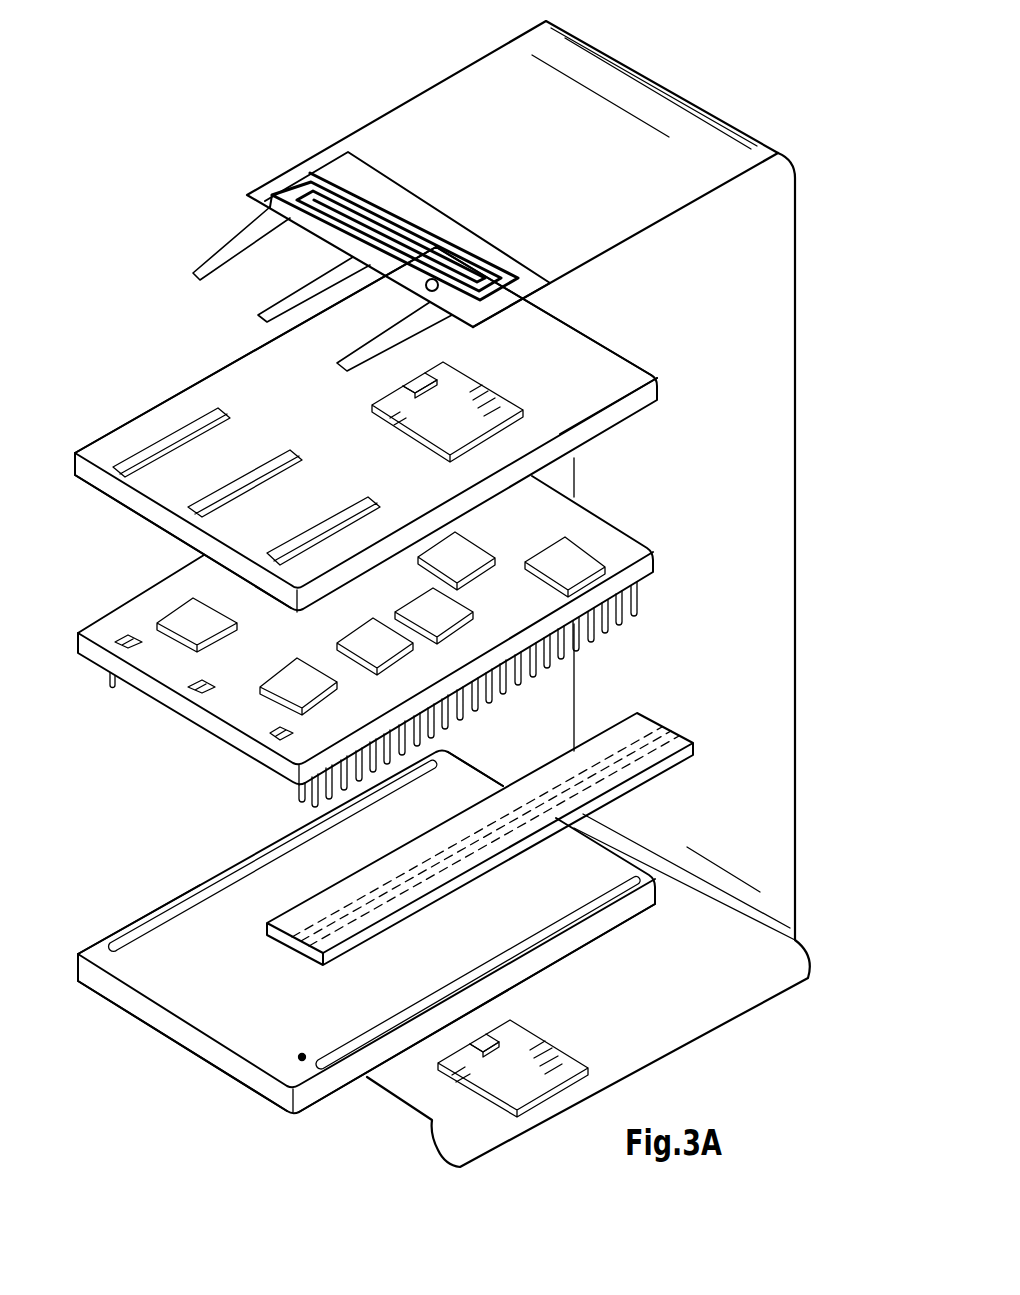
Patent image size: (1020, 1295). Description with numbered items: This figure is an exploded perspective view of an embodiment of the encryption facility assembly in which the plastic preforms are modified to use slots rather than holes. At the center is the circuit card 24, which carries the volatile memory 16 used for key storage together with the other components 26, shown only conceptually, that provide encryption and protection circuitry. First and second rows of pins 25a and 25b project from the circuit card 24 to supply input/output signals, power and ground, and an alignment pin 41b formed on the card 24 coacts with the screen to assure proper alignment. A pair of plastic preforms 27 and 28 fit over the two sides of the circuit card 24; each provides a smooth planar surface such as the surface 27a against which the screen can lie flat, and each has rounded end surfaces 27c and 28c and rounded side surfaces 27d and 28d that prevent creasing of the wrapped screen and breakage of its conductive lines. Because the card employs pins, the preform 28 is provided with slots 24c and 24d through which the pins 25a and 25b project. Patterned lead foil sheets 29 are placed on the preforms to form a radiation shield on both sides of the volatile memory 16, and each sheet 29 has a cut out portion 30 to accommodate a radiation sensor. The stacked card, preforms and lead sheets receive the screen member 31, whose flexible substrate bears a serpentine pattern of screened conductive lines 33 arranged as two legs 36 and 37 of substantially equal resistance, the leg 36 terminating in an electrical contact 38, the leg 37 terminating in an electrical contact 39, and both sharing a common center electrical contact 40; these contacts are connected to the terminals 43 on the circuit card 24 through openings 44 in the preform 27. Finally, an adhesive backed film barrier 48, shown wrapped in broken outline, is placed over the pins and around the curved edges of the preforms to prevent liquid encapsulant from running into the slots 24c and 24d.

The volatile memory 16 is at (393, 650).
The circuit card 24 is at (407, 648).
The slot 24c is at (401, 1013).
The slot 24d is at (207, 893).
The first row of pins 25a is at (647, 610).
The second row of pins 25b is at (105, 684).
The components 26 is at (290, 680).
The plastic preform 27 is at (390, 682).
The planar surface 27a is at (253, 392).
The end surface 27c is at (148, 507).
The side surface 27d is at (153, 408).
The plastic preform 28 is at (400, 963).
The end surface 28c is at (238, 1087).
The side surface 28d is at (177, 895).
The patterned lead foil sheet 29 is at (437, 427).
The cut out portion 30 is at (415, 412).
The screen member 31 is at (796, 330).
The screened conductive lines 33 is at (427, 226).
The leg 36 is at (455, 270).
The leg 37 is at (268, 210).
The electrical contact 38 is at (367, 353).
The electrical contact 39 is at (222, 256).
The common center electrical contact 40 is at (290, 295).
The alignment pin 41b is at (297, 790).
The terminals 43 is at (132, 647).
The openings 44 is at (297, 547).
The adhesive backed film barrier 48 is at (645, 722).